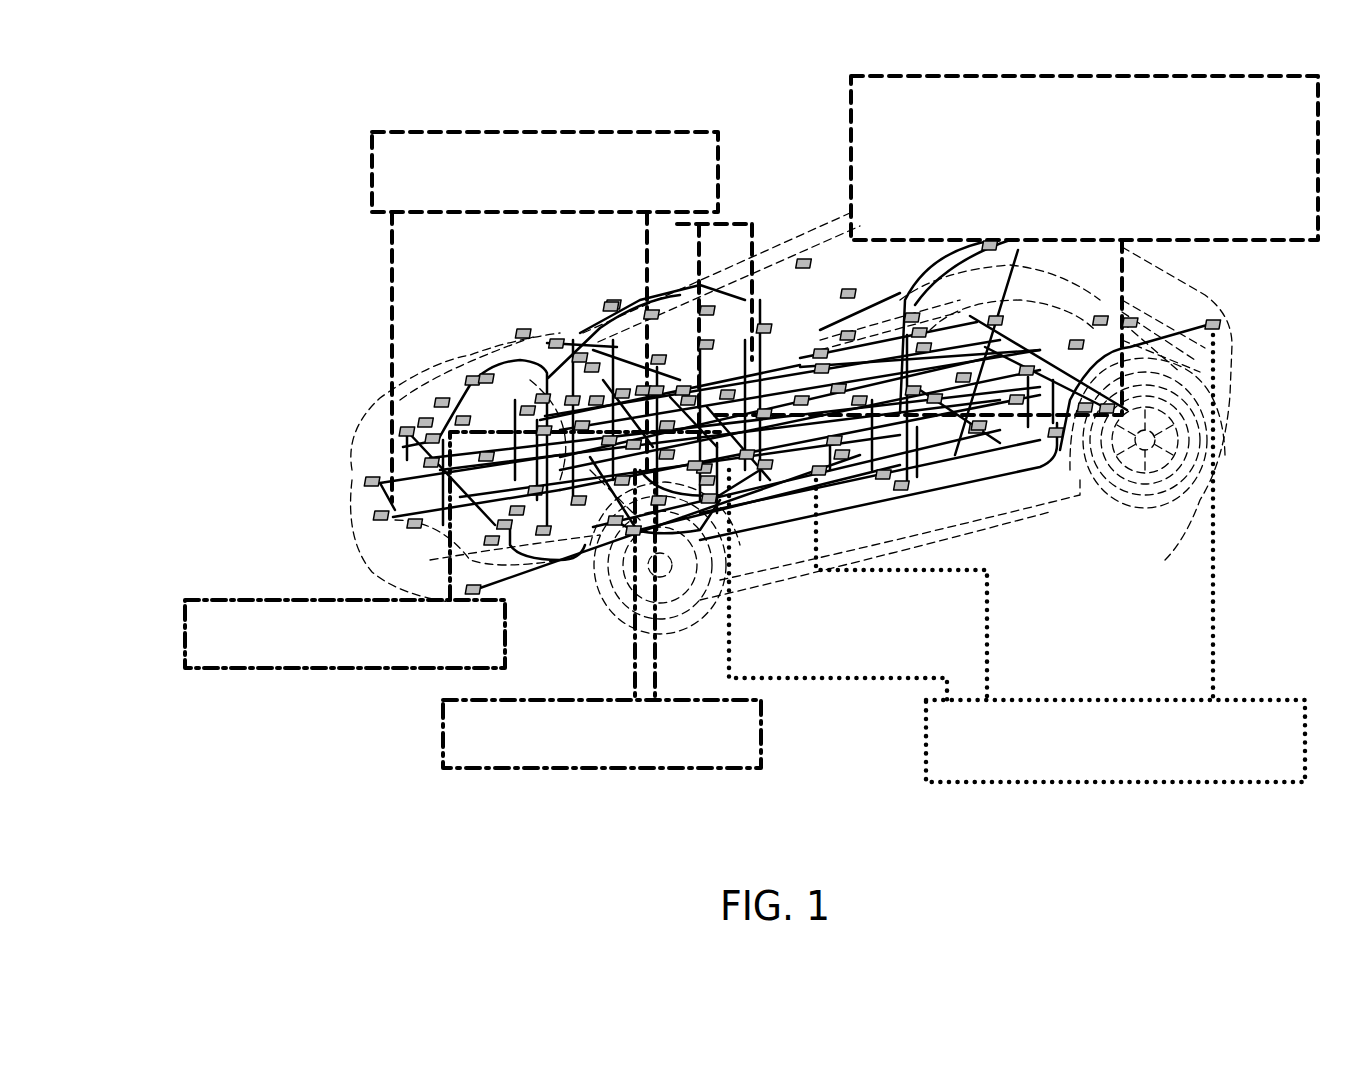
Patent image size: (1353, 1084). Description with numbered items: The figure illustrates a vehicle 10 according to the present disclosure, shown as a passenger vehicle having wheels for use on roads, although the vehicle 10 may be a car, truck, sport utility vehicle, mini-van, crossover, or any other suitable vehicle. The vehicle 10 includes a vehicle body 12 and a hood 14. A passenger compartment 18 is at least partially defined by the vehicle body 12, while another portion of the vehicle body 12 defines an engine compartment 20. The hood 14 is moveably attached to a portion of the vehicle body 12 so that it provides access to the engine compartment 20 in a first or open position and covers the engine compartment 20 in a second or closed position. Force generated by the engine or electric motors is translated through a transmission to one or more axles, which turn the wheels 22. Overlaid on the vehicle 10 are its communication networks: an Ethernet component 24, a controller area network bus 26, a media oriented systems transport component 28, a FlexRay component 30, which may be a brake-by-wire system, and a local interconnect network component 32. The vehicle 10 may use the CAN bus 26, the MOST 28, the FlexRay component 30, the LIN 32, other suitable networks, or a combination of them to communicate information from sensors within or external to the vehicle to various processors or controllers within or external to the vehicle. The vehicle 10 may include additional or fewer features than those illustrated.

The vehicle 10 is at (158, 227).
The vehicle body 12 is at (752, 358).
The hood 14 is at (478, 367).
The passenger compartment 18 is at (660, 310).
The engine compartment 20 is at (315, 436).
The wheels 22 is at (600, 590).
The Ethernet component 24 is at (148, 636).
The controller area network (CAN) bus 26 is at (340, 170).
The media oriented systems transport component (MOST) 28 is at (825, 144).
The FlexRay component 30 is at (400, 735).
The local interconnect network component (LIN) 32 is at (893, 735).